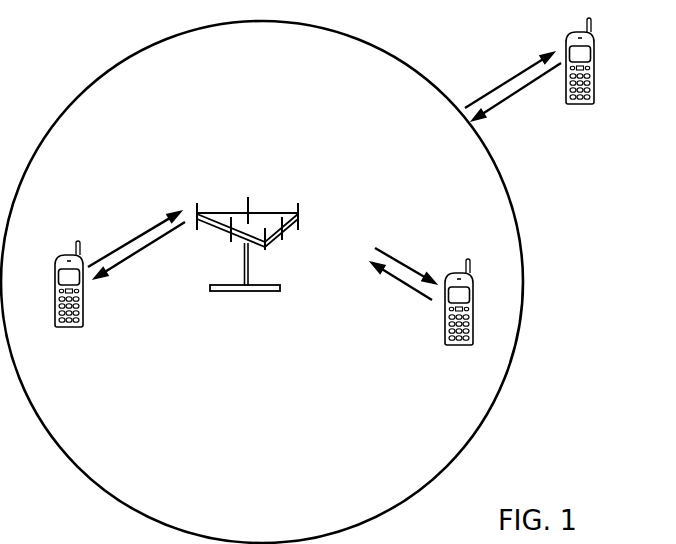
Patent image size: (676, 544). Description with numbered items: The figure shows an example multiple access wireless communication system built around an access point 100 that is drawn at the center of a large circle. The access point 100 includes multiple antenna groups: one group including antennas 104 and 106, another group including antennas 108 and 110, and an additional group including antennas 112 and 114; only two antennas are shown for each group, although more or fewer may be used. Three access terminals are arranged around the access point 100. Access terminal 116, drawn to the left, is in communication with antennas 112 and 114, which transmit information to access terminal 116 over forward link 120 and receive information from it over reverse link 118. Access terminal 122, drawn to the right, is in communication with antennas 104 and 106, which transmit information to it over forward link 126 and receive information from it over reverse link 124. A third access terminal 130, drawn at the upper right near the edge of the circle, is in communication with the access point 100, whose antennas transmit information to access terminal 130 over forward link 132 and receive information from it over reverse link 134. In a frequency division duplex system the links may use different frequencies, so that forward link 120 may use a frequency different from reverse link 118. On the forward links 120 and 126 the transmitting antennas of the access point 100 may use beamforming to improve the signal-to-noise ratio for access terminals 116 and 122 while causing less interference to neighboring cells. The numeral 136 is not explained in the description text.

The access point 100 is at (232, 292).
The antenna 104 is at (267, 250).
The antenna 106 is at (284, 236).
The antenna 108 is at (300, 222).
The antenna 110 is at (249, 202).
The antenna 112 is at (197, 206).
The antenna 114 is at (231, 240).
The access terminal 116 is at (55, 272).
The reverse link 118 is at (143, 233).
The forward link 120 is at (133, 256).
The access terminal 122 is at (475, 295).
The reverse link 124 is at (407, 287).
The forward link 126 is at (404, 263).
The access terminal 130 is at (566, 47).
The forward link 132 is at (520, 73).
The reverse link 134 is at (508, 101).
The cell coverage area 136 is at (100, 76).